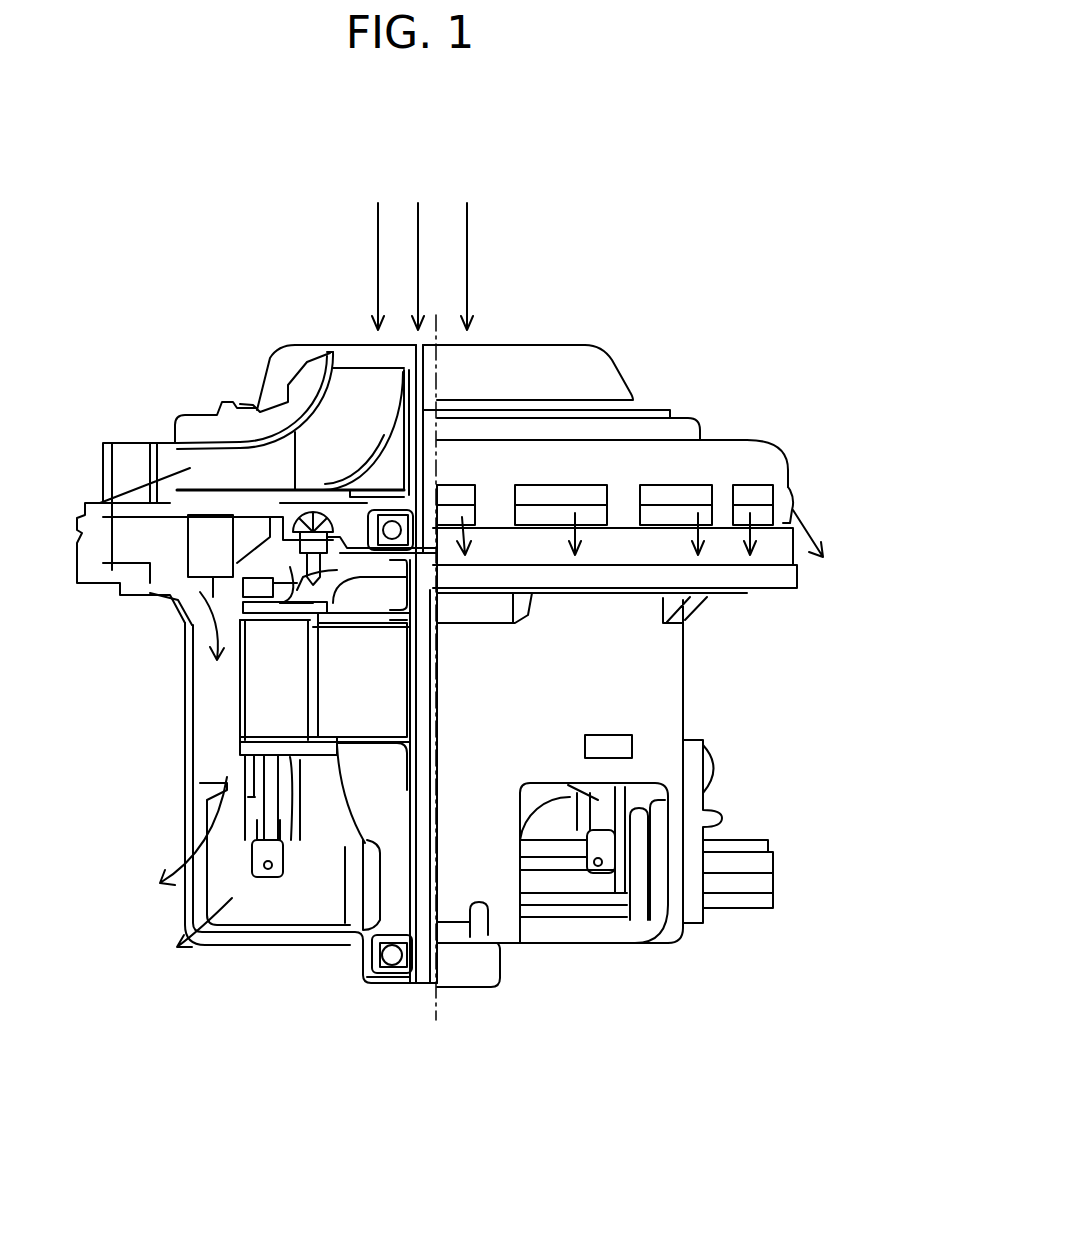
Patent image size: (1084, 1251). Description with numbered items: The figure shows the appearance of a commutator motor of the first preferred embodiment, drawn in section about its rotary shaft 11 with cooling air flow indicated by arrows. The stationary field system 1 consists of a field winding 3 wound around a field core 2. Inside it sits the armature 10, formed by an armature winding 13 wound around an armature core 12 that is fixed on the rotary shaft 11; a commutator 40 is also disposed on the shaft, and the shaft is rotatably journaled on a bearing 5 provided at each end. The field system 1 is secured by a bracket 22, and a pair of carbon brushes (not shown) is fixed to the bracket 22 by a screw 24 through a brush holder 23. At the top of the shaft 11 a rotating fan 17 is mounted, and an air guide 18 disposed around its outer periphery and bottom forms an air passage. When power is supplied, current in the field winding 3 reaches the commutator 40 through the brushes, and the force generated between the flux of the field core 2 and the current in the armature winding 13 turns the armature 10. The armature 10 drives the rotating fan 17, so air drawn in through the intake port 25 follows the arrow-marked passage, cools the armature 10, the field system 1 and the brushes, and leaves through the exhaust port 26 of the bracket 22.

The field system 1 is at (368, 752).
The field core 2 is at (262, 690).
The field winding 3 is at (320, 787).
The bearing 5 is at (363, 987).
The armature 10 is at (315, 708).
The rotary shaft 11 is at (428, 957).
The armature core 12 is at (332, 645).
The armature winding 13 is at (328, 768).
The rotating fan 17 is at (257, 430).
The air guide 18 is at (227, 497).
The bracket 22 is at (686, 670).
The brush holder 23 is at (760, 848).
The screw 24 is at (710, 770).
The intake port 25 is at (346, 344).
The exhaust port 26 is at (235, 900).
The commutator 40 is at (367, 885).